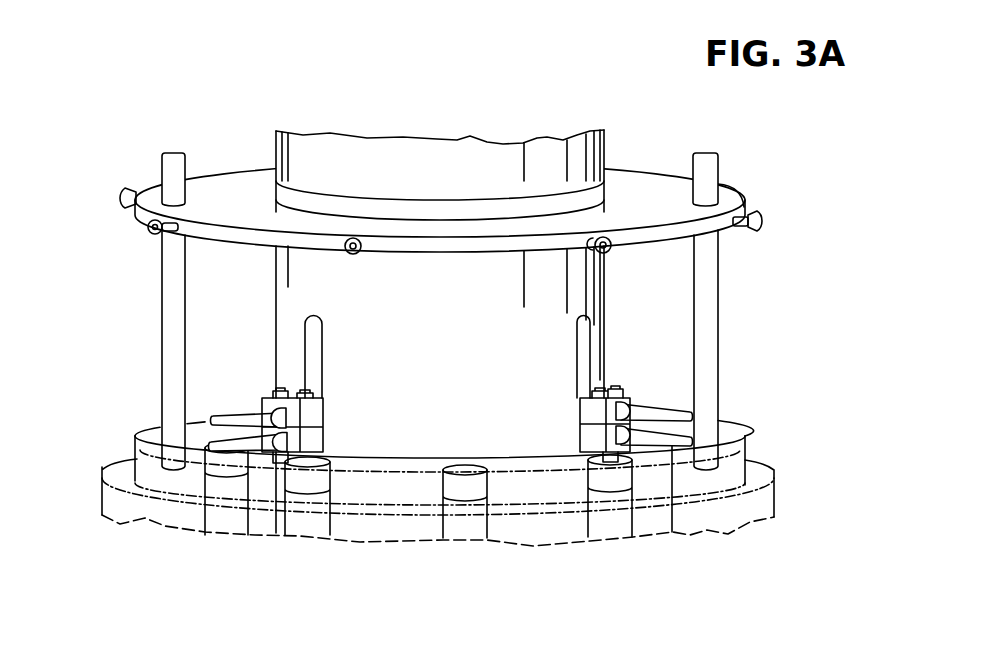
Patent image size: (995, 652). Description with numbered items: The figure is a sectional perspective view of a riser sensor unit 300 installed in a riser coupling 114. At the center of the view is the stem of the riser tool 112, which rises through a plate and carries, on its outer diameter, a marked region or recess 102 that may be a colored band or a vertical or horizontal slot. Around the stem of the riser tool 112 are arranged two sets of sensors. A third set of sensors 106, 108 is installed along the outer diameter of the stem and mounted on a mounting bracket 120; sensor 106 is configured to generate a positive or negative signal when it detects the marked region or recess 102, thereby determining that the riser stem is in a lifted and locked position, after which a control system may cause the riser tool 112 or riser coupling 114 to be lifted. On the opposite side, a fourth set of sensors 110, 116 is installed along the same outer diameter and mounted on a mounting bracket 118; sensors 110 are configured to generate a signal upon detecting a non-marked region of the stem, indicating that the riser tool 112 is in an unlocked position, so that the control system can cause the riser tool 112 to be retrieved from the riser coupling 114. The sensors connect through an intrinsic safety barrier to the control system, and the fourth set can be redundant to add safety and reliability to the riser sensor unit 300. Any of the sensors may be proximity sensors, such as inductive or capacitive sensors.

The riser sensor unit 300 is at (128, 57).
The marked region or recess 102 is at (582, 340).
The sensor 106 is at (670, 405).
The sensor 108 is at (670, 432).
The sensor 110 is at (245, 410).
The riser tool 112 is at (295, 293).
The riser coupling 114 is at (758, 503).
The sensor 116 is at (227, 440).
The mounting bracket 118 is at (310, 415).
The mounting bracket 120 is at (592, 438).